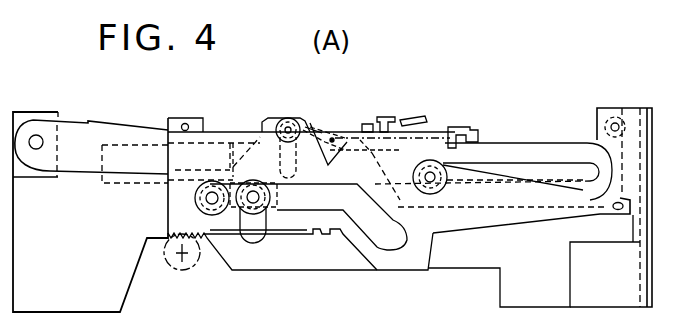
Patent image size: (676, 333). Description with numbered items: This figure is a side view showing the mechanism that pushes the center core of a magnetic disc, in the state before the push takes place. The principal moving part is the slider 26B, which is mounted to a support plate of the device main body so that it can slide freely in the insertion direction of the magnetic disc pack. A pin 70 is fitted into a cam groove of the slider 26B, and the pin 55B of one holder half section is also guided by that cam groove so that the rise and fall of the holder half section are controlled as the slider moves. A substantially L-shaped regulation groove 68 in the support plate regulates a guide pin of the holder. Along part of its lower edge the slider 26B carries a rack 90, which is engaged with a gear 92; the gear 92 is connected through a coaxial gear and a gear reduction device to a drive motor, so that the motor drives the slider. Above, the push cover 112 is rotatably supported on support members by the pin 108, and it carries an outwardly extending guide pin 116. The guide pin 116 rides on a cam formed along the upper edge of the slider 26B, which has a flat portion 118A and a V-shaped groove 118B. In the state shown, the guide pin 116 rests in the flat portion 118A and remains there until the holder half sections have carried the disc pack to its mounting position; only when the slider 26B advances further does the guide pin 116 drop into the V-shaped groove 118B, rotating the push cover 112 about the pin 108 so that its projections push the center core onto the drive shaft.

The pin 108 is at (37, 134).
The push cover 112 is at (133, 123).
The guide pin 116 is at (186, 123).
The flat portion 118A is at (238, 128).
The V-shaped groove 118B is at (308, 121).
The regulation groove 68 is at (432, 172).
The pin 70 is at (195, 198).
The pin 55B is at (253, 213).
The rack 90 is at (327, 236).
The gear 92 is at (182, 263).
The slider 26B is at (447, 218).